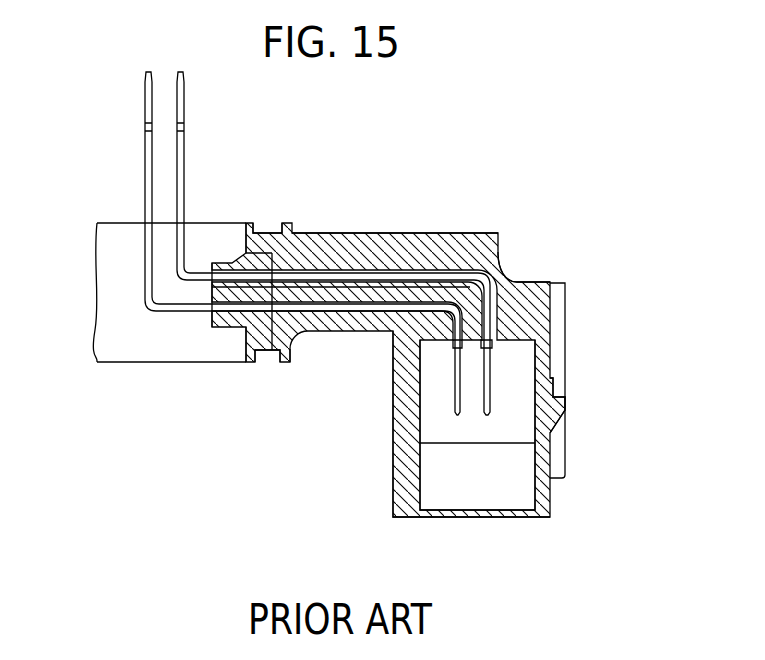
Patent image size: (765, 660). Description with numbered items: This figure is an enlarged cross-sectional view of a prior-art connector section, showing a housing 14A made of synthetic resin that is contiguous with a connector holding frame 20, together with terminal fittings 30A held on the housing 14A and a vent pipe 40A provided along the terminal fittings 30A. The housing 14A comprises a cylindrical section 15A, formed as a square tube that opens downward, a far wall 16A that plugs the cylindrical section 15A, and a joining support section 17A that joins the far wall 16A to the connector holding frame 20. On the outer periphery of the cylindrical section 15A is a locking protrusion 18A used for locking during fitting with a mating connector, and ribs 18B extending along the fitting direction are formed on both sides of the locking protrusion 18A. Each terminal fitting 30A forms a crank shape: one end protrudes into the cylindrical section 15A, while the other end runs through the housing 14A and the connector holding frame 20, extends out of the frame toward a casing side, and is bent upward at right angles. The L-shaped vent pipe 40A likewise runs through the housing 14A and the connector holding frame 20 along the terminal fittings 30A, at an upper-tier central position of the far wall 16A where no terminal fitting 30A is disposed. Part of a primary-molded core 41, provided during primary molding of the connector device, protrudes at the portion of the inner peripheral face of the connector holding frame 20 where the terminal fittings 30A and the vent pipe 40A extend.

The housing 14A is at (474, 187).
The cylindrical section 15A is at (393, 482).
The far wall 16A is at (516, 328).
The joining support section 17A is at (350, 233).
The locking protrusion 18A is at (566, 427).
The rib 18B is at (566, 367).
The connector holding frame 20 is at (247, 222).
The terminal fitting 30A is at (487, 392).
The vent pipe 40A is at (406, 266).
The primary-molded core 41 is at (233, 329).